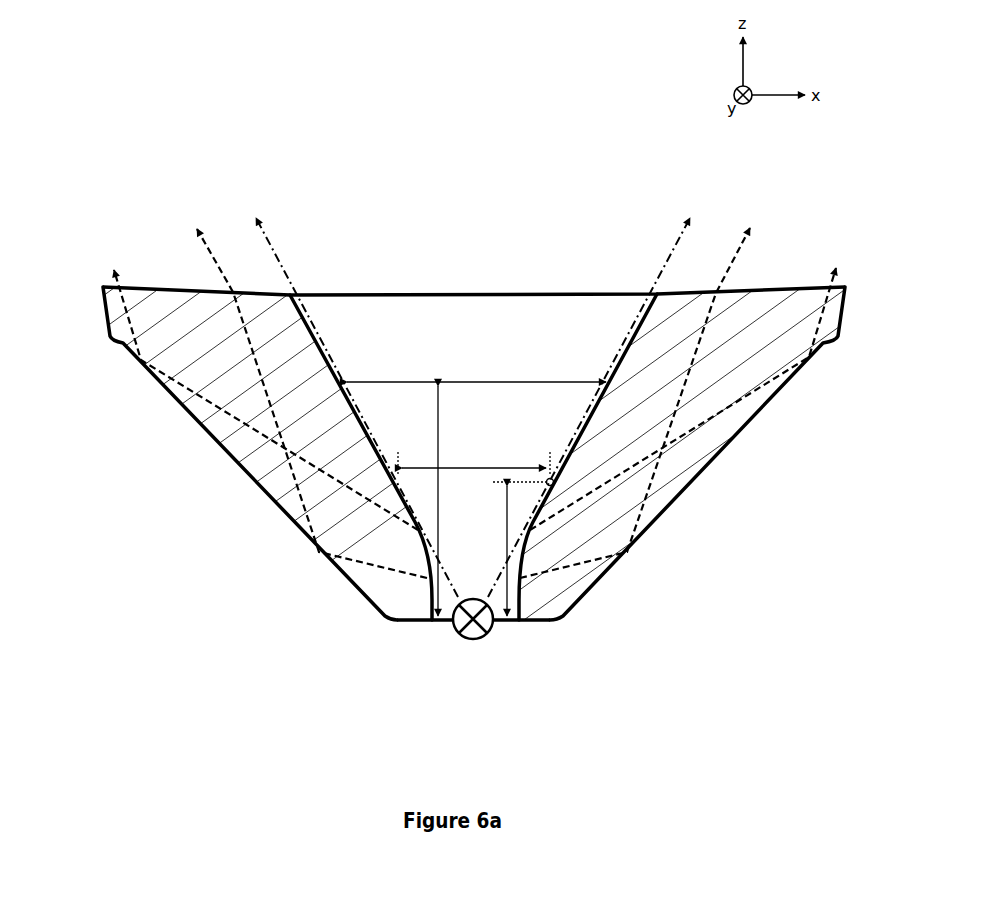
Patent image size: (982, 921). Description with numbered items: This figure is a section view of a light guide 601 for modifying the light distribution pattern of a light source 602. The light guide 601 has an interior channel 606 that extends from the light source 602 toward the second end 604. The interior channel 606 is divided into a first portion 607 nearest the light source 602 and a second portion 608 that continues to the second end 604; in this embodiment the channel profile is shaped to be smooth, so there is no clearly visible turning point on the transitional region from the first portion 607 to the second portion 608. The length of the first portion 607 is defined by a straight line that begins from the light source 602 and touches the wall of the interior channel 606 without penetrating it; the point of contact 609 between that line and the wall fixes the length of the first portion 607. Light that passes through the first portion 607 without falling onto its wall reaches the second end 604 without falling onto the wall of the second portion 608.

The light guide 601 is at (103, 300).
The light source 602 is at (477, 640).
The second end 604 is at (428, 291).
The interior channel 606 is at (543, 333).
The first portion 607 is at (492, 558).
The second portion 608 is at (497, 345).
The point of contact 609 is at (554, 480).